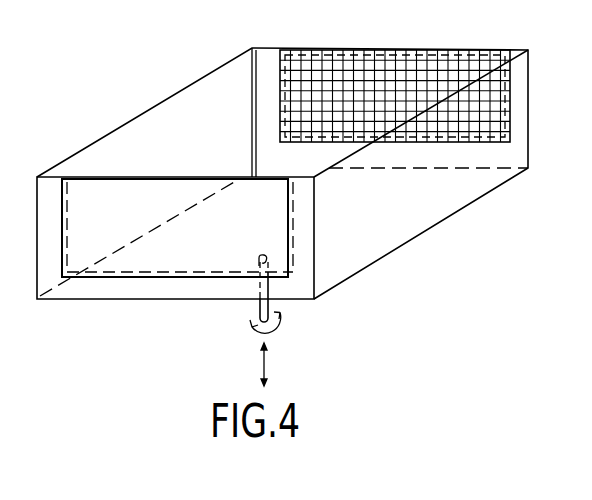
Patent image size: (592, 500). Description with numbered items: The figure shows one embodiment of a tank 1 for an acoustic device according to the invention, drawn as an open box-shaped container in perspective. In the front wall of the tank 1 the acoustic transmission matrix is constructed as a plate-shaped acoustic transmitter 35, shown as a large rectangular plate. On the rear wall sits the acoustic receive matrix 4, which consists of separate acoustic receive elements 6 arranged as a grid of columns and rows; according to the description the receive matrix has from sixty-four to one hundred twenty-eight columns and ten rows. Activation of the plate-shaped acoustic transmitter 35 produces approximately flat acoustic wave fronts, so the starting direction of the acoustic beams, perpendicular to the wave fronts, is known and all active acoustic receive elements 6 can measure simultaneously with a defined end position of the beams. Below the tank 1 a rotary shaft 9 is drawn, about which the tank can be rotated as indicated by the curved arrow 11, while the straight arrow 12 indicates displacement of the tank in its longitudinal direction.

The tank 1 is at (462, 209).
The acoustic receive matrix 4 is at (500, 50).
The acoustic receive elements 6 is at (339, 64).
The rotary shaft 9 is at (258, 322).
The arrow 11 is at (283, 317).
The arrow 12 is at (266, 361).
The plate-shaped acoustic transmitter 35 is at (62, 224).